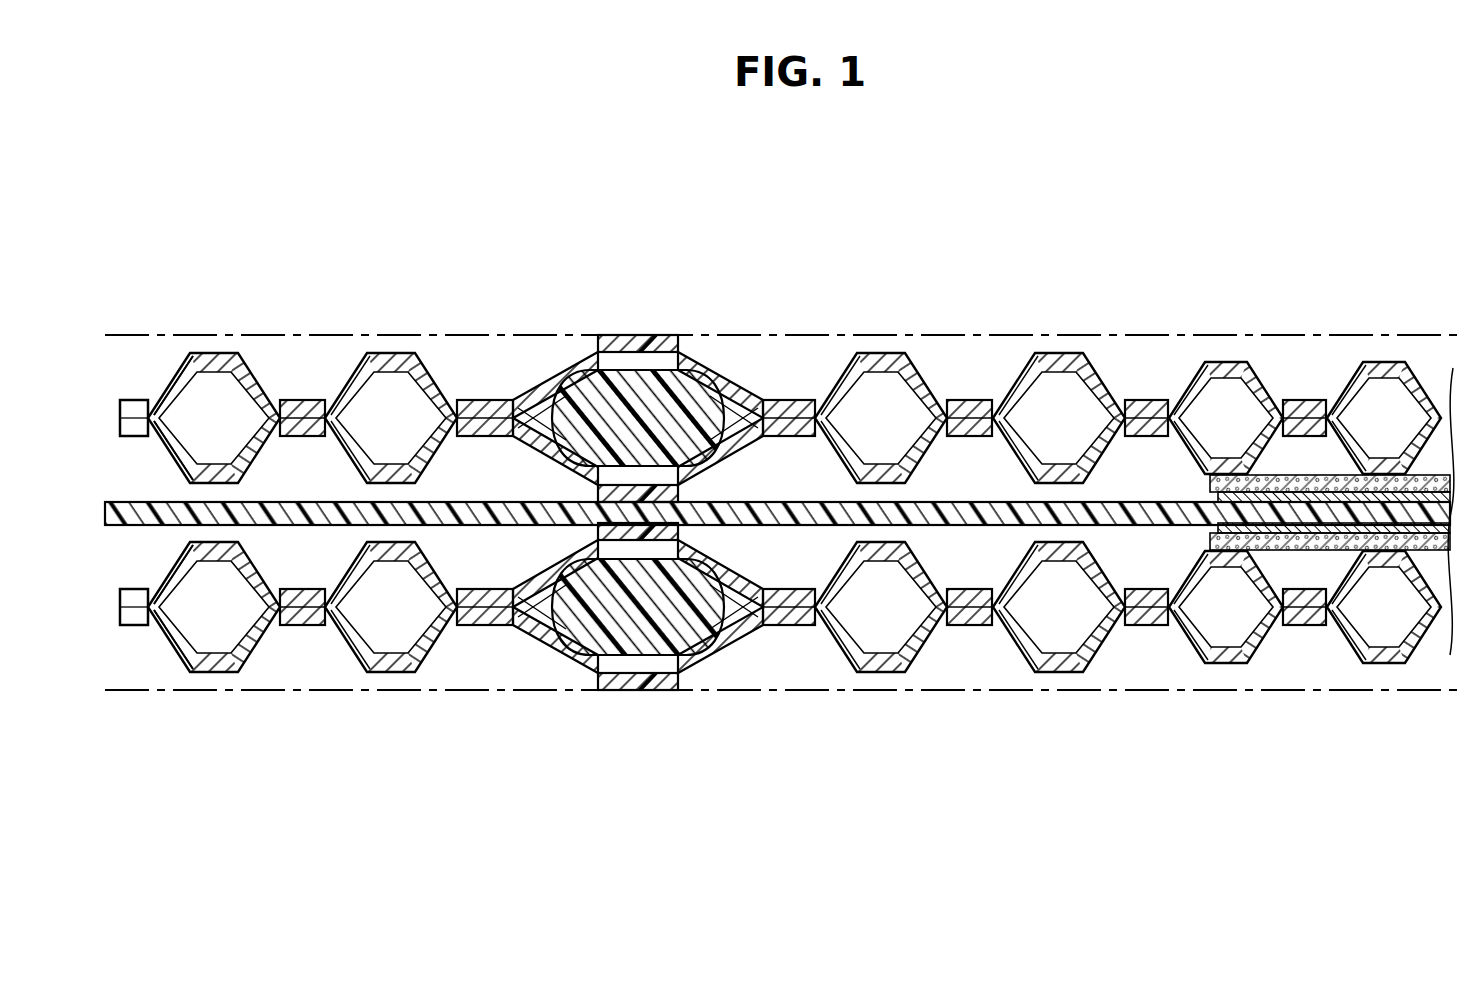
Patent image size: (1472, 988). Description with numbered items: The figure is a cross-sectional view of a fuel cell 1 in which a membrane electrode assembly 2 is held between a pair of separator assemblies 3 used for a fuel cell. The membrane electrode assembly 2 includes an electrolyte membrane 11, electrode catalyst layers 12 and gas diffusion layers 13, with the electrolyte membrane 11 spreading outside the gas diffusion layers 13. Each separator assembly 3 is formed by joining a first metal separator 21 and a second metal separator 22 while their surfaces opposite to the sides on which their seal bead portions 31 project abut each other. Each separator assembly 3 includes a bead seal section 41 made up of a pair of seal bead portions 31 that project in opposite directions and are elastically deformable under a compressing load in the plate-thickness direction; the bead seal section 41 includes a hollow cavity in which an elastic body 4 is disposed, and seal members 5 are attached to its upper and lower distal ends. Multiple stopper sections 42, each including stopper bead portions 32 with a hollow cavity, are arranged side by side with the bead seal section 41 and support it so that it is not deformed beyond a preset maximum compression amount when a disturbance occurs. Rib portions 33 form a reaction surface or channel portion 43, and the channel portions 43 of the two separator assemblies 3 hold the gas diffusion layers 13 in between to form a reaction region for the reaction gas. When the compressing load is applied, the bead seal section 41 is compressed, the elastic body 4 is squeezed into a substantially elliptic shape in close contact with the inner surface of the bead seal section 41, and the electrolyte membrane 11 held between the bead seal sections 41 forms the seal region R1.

The fuel cell 1 is at (374, 261).
The membrane electrode assembly 2 is at (1212, 287).
The separator assembly 3 is at (195, 287).
The elastic body 4 is at (747, 443).
The seal member 5 is at (684, 345).
The electrolyte membrane 11 is at (1350, 513).
The electrode catalyst layer 12 is at (1268, 497).
The gas diffusion layer 13 is at (1228, 483).
The first metal separator 21 is at (143, 457).
The second metal separator 22 is at (155, 370).
The seal bead portion 31 is at (548, 386).
The stopper bead portion 32 is at (257, 383).
The rib portion 33 is at (1192, 386).
The bead seal section 41 is at (563, 482).
The stopper section 42 is at (177, 484).
The reaction surface or channel portion 43 is at (1199, 474).
The seal region R1 is at (678, 307).